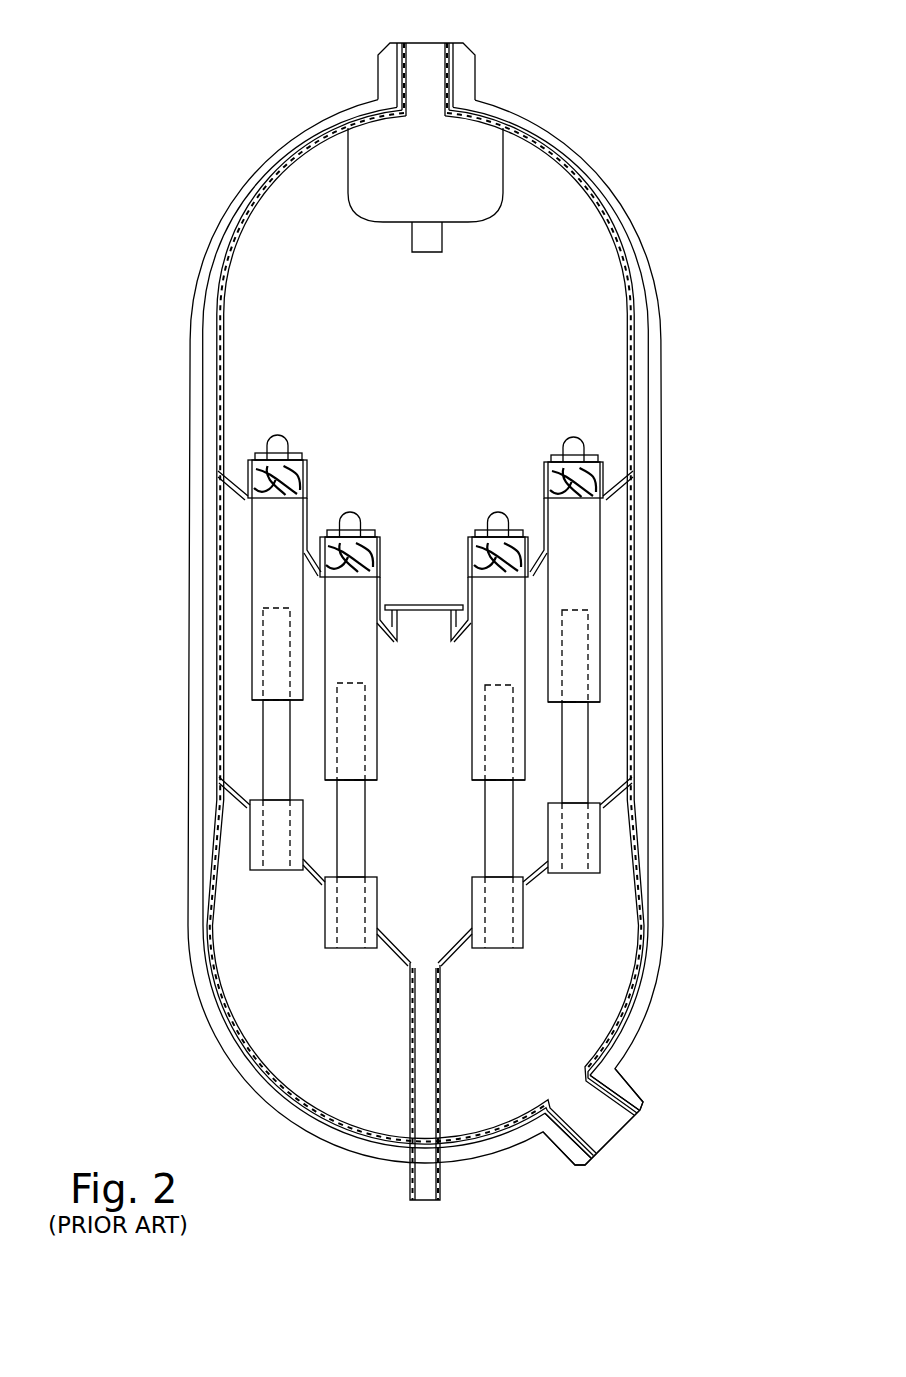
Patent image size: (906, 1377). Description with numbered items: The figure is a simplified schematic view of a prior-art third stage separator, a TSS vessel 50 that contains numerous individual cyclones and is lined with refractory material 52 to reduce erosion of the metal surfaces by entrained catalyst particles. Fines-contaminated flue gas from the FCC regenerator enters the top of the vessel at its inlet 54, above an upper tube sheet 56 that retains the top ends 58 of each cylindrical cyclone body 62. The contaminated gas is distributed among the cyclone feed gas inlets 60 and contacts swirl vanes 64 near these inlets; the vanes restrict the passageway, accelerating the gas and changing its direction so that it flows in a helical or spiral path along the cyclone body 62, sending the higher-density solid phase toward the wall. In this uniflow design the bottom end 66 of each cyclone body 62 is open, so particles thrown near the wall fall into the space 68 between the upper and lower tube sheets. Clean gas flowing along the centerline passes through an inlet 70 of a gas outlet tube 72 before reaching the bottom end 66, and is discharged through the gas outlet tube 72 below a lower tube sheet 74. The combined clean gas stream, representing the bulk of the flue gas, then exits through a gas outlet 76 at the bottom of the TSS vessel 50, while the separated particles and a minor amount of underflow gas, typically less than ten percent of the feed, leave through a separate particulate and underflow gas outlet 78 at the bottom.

The TSS vessel 50 is at (680, 620).
The refractory material 52 is at (626, 313).
The inlet 54 is at (437, 43).
The upper tube sheet 56 is at (547, 560).
The top ends 58 is at (383, 540).
The cyclone feed gas inlets 60 is at (298, 455).
The cyclone body 62 is at (378, 664).
The swirl vanes 64 is at (573, 488).
The bottom end 66 is at (375, 782).
The space 68 is at (436, 889).
The inlet 70 is at (282, 608).
The gas outlet tube 72 is at (484, 843).
The lower tube sheet 74 is at (535, 872).
The gas outlet 76 is at (620, 1135).
The particulate and underflow gas outlet 78 is at (433, 1202).